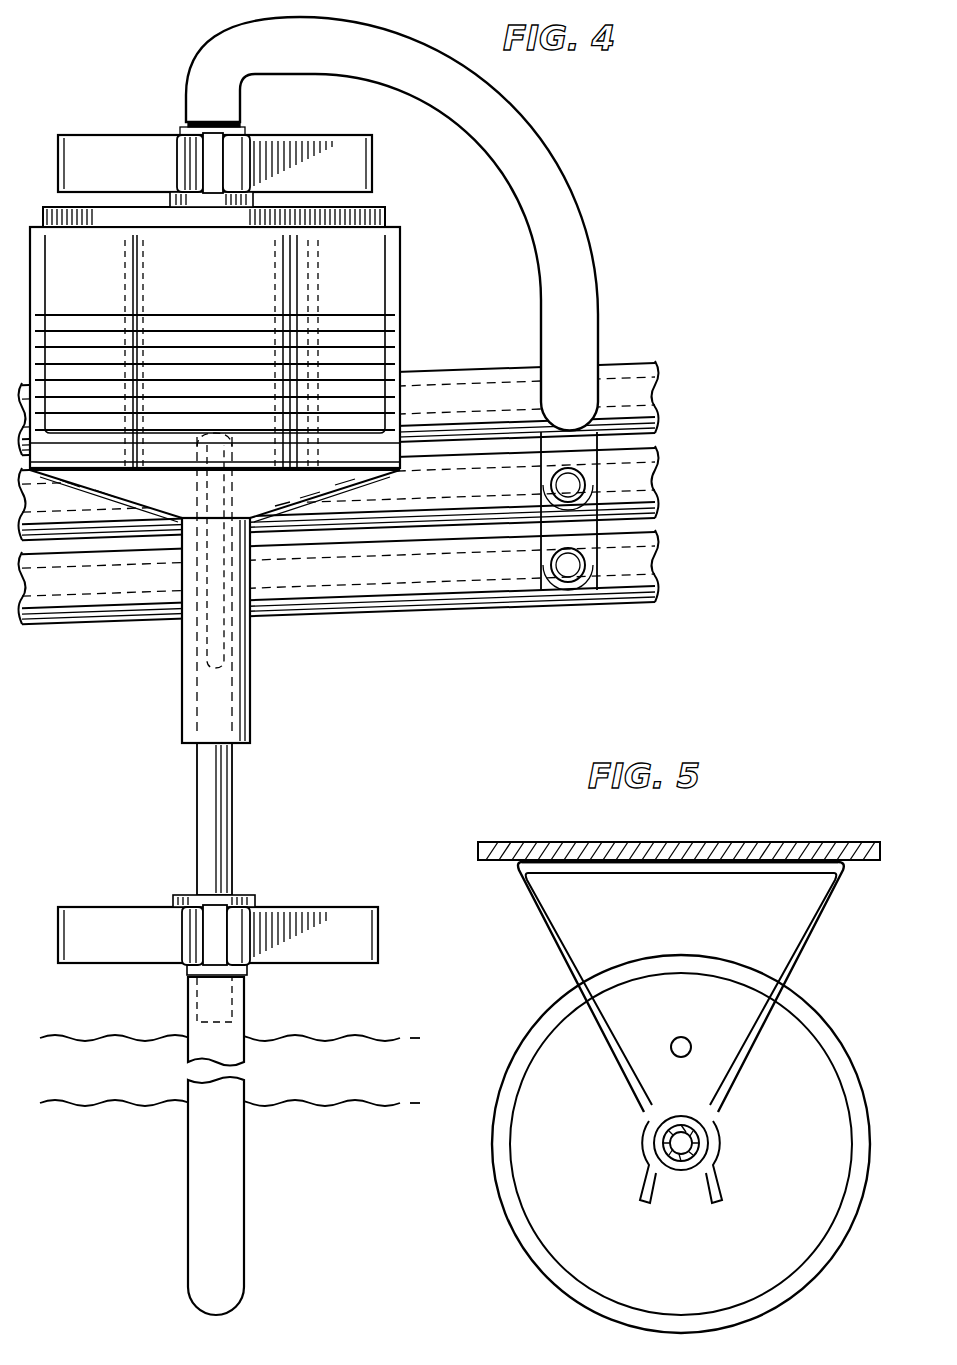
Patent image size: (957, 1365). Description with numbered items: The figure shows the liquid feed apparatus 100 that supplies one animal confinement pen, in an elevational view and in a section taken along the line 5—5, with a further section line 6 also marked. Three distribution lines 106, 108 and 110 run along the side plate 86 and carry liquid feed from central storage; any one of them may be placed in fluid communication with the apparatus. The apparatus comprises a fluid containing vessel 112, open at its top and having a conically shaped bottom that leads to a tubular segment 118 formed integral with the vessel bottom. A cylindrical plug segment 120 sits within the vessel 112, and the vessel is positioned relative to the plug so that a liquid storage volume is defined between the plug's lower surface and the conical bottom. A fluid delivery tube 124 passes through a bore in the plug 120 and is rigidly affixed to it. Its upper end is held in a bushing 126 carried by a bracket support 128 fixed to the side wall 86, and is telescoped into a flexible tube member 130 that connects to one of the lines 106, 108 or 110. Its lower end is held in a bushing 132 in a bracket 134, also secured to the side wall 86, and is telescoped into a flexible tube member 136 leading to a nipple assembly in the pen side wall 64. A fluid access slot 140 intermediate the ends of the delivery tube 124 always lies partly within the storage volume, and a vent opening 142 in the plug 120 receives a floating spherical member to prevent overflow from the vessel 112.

In FIG. 4, the liquid feed apparatus 100 is at (640, 182).
In FIG. 4, the distribution line 106 is at (636, 393).
In FIG. 4, the distribution line 108 is at (637, 478).
In FIG. 4, the distribution line 110 is at (638, 567).
In FIG. 4, the fluid containing vessel 112 is at (393, 290).
In FIG. 5, the fluid containing vessel 112 is at (522, 1222).
In FIG. 4, the tubular segment 118 is at (242, 710).
In FIG. 4, the cylindrical plug segment 120 is at (385, 217).
In FIG. 5, the cylindrical plug segment 120 is at (813, 1207).
In FIG. 4, the fluid delivery tube 124 is at (197, 123).
In FIG. 5, the fluid delivery tube 124 is at (668, 1137).
In FIG. 4, the bushing 126 is at (212, 155).
In FIG. 5, the bushing 126 is at (682, 1167).
In FIG. 4, the bracket support 128 is at (78, 157).
In FIG. 5, the bracket support 128 is at (550, 917).
In FIG. 4, the flexible tube member 130 is at (532, 167).
In FIG. 4, the bushing 132 is at (217, 923).
In FIG. 4, the bracket 134 is at (303, 923).
In FIG. 4, the flexible tube member 136 is at (207, 1232).
In FIG. 4, the fluid access slot 140 is at (190, 630).
In FIG. 5, the vent opening 142 is at (678, 1047).
In FIG. 4, the side plate 86 is at (330, 1020).
In FIG. 5, the side plate 86 is at (515, 857).
In FIG. 4, the side wall 64 is at (90, 1128).
In FIG. 4, the section line 5 is at (38, 131).
In FIG. 4, the section line 6 is at (250, 92).